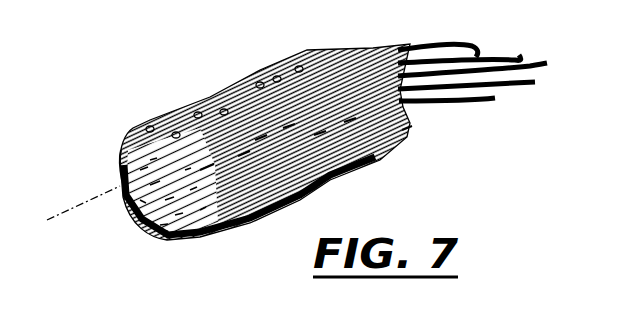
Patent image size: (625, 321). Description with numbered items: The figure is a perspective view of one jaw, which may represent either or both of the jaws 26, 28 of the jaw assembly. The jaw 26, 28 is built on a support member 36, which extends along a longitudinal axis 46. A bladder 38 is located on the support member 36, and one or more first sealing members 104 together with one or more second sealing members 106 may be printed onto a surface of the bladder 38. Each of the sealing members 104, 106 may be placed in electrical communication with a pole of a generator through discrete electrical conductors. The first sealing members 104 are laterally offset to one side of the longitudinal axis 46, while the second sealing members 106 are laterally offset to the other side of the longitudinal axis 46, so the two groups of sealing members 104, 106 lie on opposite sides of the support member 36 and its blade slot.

The jaw 26 is at (84, 84).
The jaw 28 is at (297, 133).
The support member 36 is at (170, 246).
The bladder 38 is at (121, 163).
The longitudinal axis 46 is at (70, 207).
The first sealing members 104 is at (260, 137).
The second sealing members 106 is at (223, 110).